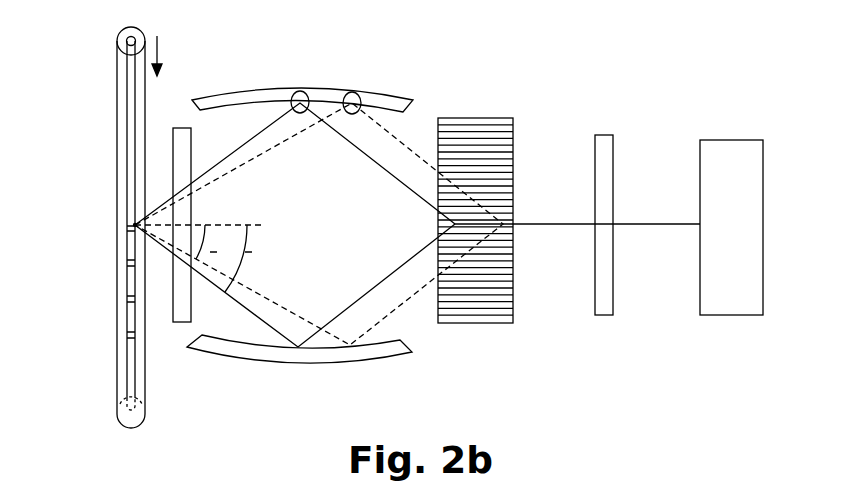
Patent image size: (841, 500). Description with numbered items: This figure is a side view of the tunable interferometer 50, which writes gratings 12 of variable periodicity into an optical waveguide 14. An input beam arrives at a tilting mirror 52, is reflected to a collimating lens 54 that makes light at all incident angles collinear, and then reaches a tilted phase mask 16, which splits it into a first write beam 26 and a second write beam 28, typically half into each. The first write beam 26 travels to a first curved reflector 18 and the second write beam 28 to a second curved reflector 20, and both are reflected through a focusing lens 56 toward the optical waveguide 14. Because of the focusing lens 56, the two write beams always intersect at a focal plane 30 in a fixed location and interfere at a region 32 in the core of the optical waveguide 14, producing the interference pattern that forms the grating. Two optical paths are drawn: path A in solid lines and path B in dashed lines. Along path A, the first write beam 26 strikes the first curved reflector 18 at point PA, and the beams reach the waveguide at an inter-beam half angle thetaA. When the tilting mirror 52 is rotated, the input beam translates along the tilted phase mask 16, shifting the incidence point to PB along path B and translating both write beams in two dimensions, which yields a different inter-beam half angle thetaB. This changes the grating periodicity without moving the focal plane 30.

The gratings 12 is at (110, 217).
The optical waveguide 14 is at (117, 80).
The tilted phase mask 16 is at (496, 118).
The first curved reflector 18 is at (246, 91).
The second curved reflector 20 is at (375, 354).
The first write beam 26 is at (377, 165).
The second write beam 28 is at (371, 292).
The focal plane 30 is at (136, 232).
The region 32 is at (134, 224).
The tunable interferometer 50 is at (421, 44).
The tilting mirror 52 is at (728, 140).
The collimating lens 54 is at (603, 135).
The focusing lens 56 is at (178, 128).
The point PA is at (303, 93).
The point PB is at (357, 99).
The optical path A is at (421, 199).
The optical path B is at (417, 150).
The inter-beam half angle thetaA is at (254, 258).
The inter-beam half angle thetaB is at (198, 246).